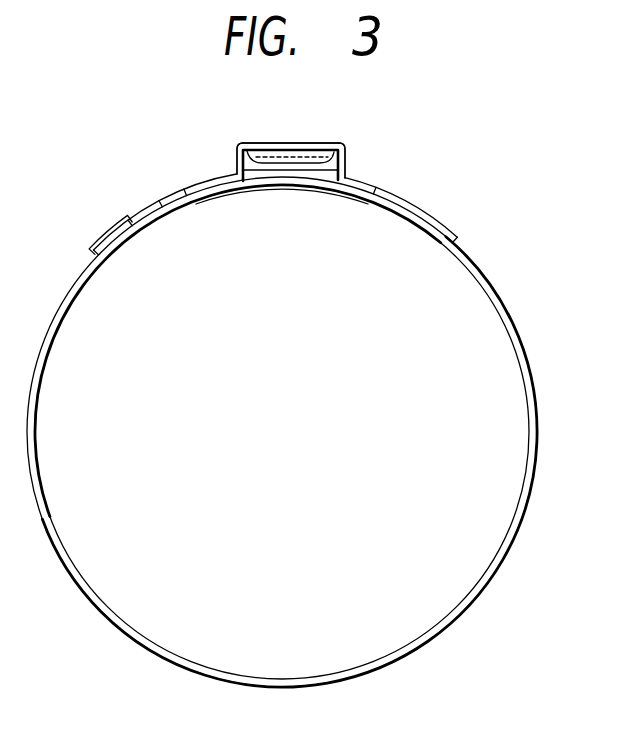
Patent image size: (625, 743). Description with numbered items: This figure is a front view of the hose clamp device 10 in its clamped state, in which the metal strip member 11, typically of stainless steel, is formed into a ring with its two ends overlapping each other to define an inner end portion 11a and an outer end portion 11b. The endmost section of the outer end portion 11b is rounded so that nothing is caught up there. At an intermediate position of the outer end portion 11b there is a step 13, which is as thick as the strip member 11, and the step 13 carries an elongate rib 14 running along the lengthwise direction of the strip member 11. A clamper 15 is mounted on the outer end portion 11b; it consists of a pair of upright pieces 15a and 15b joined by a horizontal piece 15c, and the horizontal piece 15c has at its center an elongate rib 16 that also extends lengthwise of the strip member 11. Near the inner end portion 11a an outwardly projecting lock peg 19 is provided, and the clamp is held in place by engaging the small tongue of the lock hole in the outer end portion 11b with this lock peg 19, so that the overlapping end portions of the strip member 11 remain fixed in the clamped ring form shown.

The hose clamp device 10 is at (496, 277).
The strip member 11 is at (516, 334).
The inner end portion 11a is at (246, 187).
The outer end portion 11b is at (184, 189).
The step 13 is at (391, 193).
The elongate rib 14 is at (445, 240).
The clamper 15 is at (294, 168).
The upright piece 15a is at (232, 166).
The upright piece 15b is at (343, 170).
The horizontal piece 15c is at (300, 143).
The elongate rib 16 is at (281, 164).
The lock peg 19 is at (147, 215).